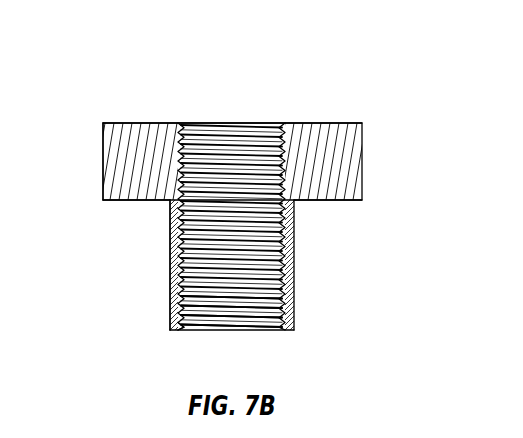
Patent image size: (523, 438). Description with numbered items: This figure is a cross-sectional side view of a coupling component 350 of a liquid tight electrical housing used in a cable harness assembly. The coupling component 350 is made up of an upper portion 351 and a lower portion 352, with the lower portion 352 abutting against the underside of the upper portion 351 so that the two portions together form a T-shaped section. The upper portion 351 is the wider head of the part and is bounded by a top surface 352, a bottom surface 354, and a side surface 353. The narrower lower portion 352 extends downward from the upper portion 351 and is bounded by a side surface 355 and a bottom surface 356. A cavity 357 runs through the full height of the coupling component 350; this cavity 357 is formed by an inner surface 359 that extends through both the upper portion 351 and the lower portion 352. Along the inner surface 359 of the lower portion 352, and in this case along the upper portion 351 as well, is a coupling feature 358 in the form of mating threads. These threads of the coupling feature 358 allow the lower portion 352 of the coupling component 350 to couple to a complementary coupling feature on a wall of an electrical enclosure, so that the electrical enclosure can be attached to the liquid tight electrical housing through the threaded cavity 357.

The coupling component 350 is at (211, 197).
The upper portion 351 is at (222, 151).
The lower portion 352 is at (212, 213).
The side surface 353 is at (104, 162).
The bottom surface 354 is at (119, 201).
The side surface 355 is at (294, 264).
The bottom surface 356 is at (292, 330).
The cavity 357 is at (214, 144).
The coupling feature 358 is at (255, 302).
The inner surface 359 is at (184, 311).